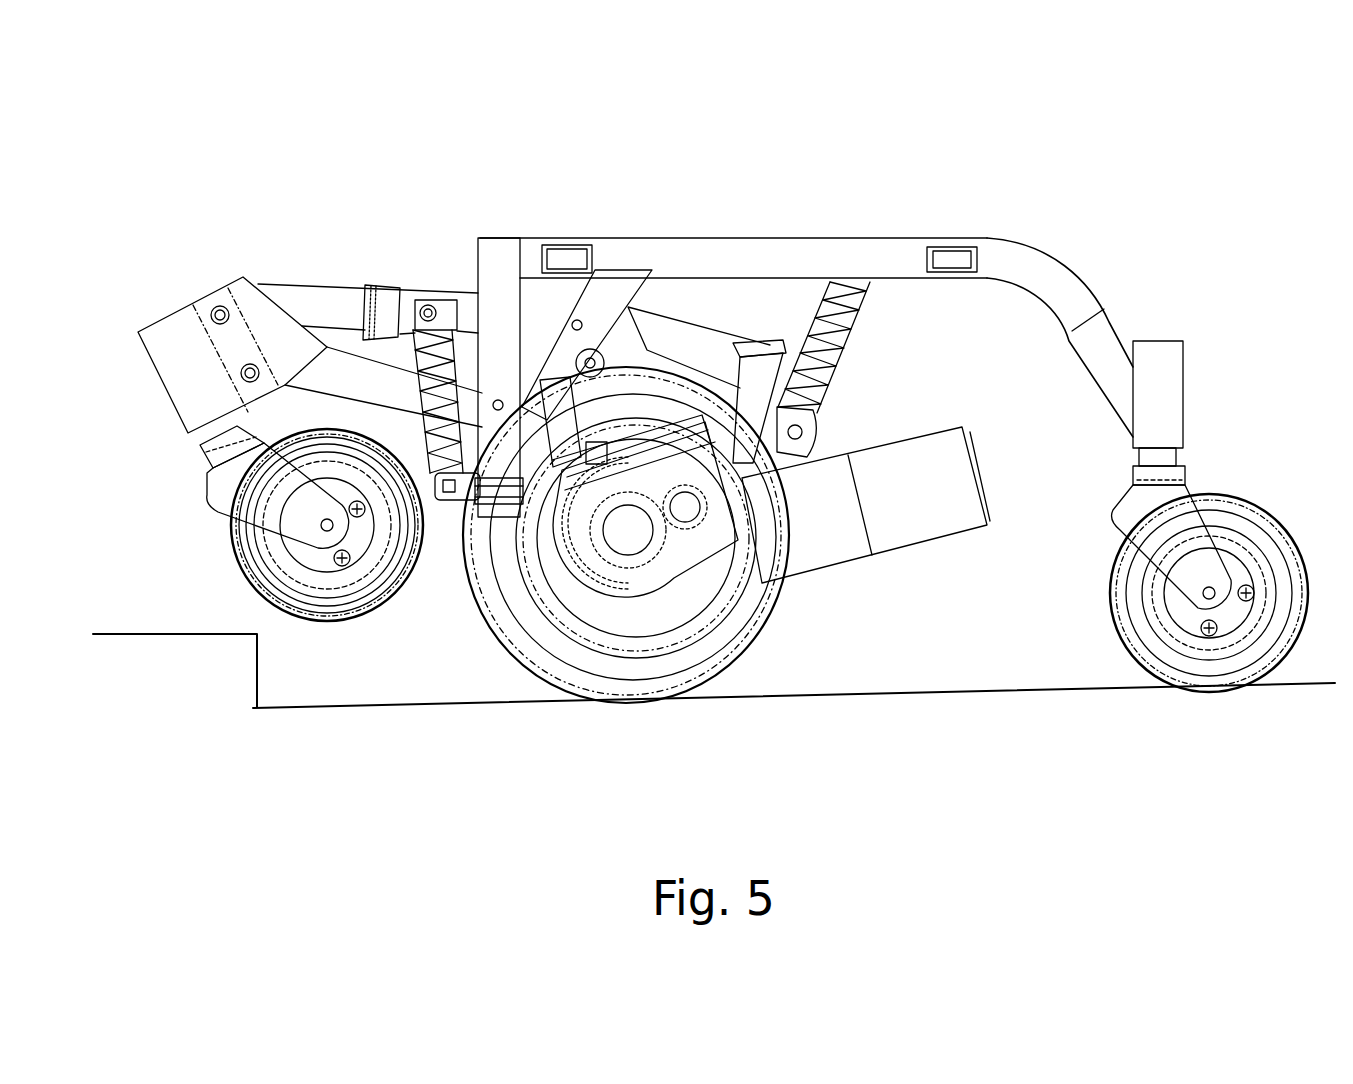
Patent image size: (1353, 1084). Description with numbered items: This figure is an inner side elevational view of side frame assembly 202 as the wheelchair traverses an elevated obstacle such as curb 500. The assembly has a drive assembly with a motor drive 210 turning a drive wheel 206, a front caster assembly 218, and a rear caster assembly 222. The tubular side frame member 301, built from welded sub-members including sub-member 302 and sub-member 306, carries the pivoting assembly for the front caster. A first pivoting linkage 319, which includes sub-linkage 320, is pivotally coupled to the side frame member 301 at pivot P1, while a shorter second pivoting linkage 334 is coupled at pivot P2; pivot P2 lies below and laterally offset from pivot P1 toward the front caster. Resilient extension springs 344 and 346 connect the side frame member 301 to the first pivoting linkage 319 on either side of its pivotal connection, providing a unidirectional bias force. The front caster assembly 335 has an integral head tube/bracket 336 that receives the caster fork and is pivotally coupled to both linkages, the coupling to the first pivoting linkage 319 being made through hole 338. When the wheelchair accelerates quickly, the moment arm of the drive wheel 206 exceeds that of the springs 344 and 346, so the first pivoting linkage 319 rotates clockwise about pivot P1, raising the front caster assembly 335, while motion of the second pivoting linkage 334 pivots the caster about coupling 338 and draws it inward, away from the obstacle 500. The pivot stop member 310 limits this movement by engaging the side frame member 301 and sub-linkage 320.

The side frame assembly 202 is at (1176, 147).
The drive wheel 206 is at (790, 628).
The motor drive 210 is at (922, 507).
The front caster assembly 218 is at (245, 572).
The rear caster assembly 222 is at (1238, 500).
The side frame member 301 is at (916, 237).
The sub-member 302 is at (790, 258).
The sub-member 306 is at (610, 282).
The pivot stop member 310 is at (613, 347).
The first pivoting linkage 319 is at (283, 274).
The sub-linkage 320 is at (338, 300).
The second pivoting linkage 334 is at (362, 383).
The front caster assembly 335 is at (194, 536).
The head tube/bracket 336 is at (178, 368).
The first hole 338 is at (220, 305).
The resilient extension spring 344 is at (437, 437).
The resilient extension spring 346 is at (848, 348).
The curb 500 is at (257, 672).
The pivot P1 is at (577, 320).
The pivot P2 is at (498, 400).